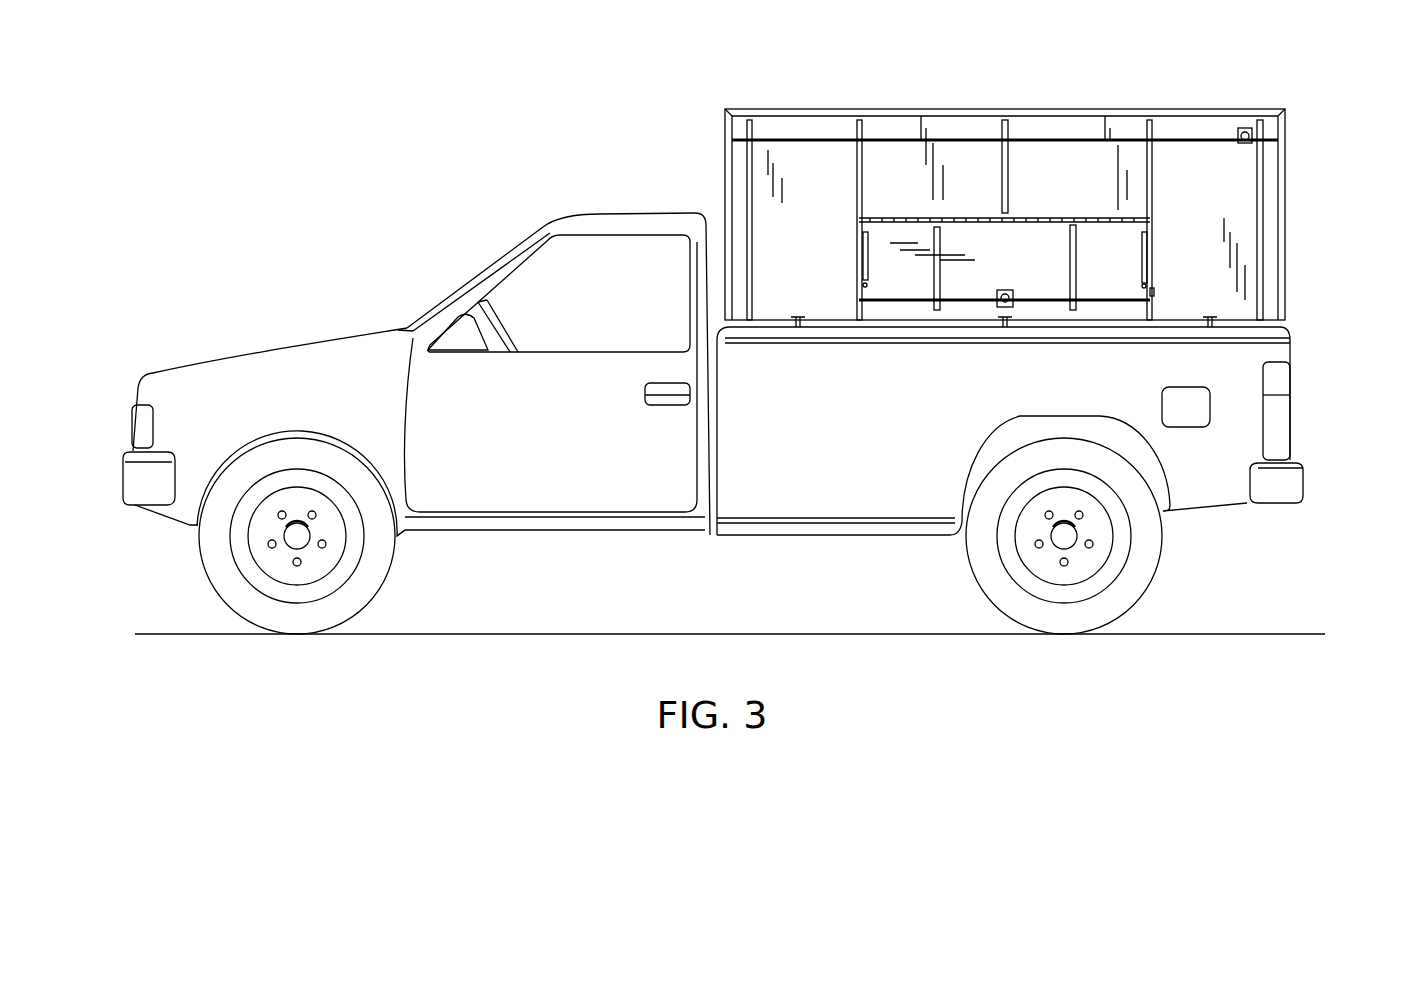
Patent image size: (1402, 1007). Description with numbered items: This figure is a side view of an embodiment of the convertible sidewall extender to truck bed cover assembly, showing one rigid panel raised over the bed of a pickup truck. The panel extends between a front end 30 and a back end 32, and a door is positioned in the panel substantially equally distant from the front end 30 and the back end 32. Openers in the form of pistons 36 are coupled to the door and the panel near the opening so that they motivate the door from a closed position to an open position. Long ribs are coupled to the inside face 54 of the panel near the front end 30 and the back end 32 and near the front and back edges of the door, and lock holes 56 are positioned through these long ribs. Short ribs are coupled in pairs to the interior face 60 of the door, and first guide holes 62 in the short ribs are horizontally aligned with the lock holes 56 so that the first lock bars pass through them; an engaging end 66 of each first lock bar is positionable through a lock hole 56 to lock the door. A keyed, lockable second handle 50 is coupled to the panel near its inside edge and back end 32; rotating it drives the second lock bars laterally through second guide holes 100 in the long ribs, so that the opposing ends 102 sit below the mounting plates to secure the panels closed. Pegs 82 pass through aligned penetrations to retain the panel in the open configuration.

The front end 30 is at (974, 225).
The back end 32 is at (1289, 232).
The piston 36 is at (1138, 255).
The second handle 50 is at (1245, 126).
The inside face 54 is at (807, 190).
The lock hole 56 is at (850, 299).
The interior face 60 is at (919, 292).
The first guide hole 62 is at (947, 298).
The engaging end 66 is at (1155, 293).
The peg 82 is at (806, 331).
The second guide hole 100 is at (998, 137).
The opposing end 102 is at (723, 140).